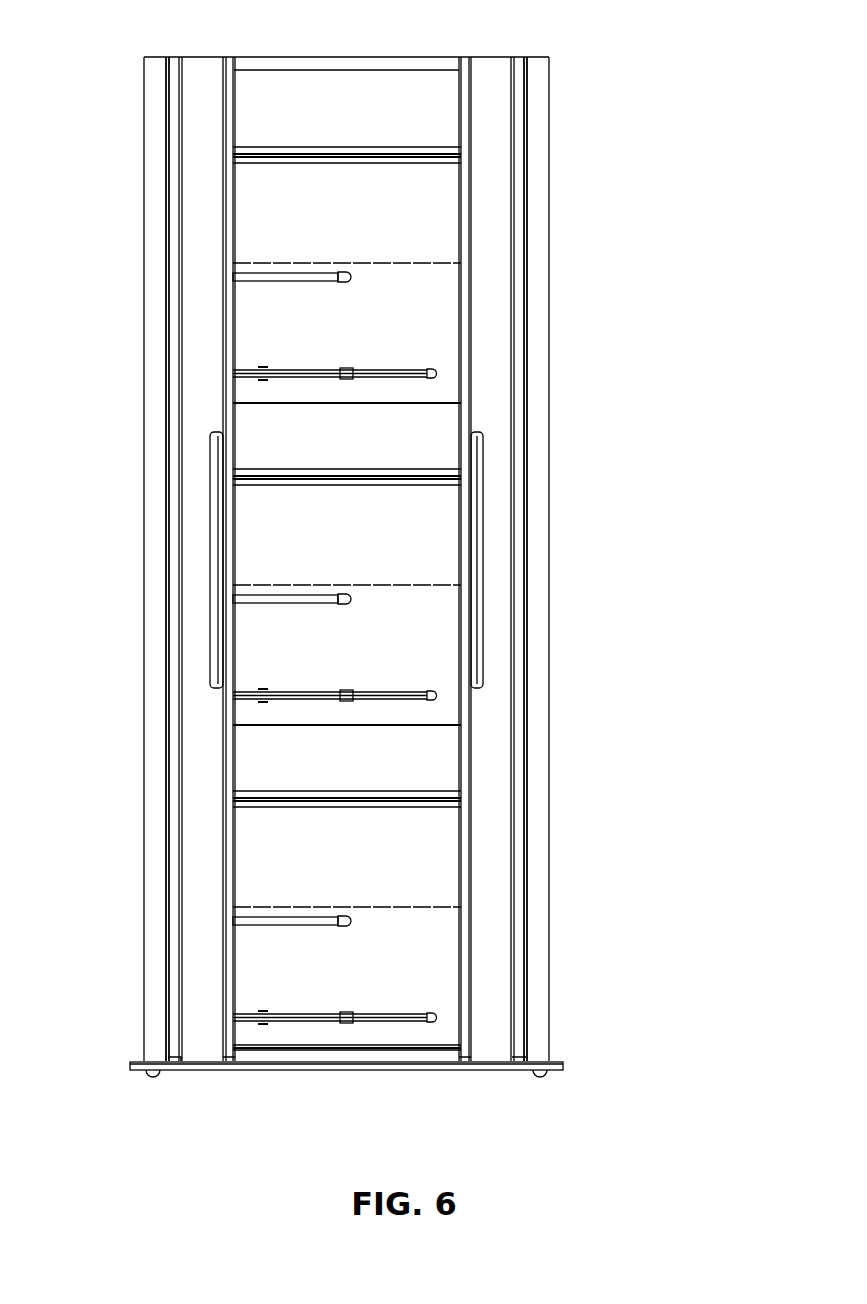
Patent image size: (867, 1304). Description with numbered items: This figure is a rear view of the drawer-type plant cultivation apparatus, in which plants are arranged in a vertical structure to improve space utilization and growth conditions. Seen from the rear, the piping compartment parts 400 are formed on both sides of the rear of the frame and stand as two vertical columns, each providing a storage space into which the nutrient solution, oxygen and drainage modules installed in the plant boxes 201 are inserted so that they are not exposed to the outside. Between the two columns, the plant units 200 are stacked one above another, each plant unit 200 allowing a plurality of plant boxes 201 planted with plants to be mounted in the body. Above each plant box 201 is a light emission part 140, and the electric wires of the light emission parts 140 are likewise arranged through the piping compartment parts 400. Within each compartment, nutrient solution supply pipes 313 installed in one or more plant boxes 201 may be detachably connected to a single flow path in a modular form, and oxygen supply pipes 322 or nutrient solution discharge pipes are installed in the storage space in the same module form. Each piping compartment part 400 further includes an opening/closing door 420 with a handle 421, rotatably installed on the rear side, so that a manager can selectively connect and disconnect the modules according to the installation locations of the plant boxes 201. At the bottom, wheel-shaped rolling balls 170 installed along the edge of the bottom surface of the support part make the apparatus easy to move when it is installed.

The piping compartment part 400 is at (196, 57).
The light emission part 140 is at (330, 163).
The nutrient solution supply pipe 313 is at (265, 281).
The oxygen supply pipe 322 is at (285, 376).
The plant box 201 is at (383, 320).
The plant unit 200 is at (688, 955).
The opening/closing door 420 is at (195, 563).
The handle 421 is at (218, 628).
The rolling ball 170 is at (153, 1078).